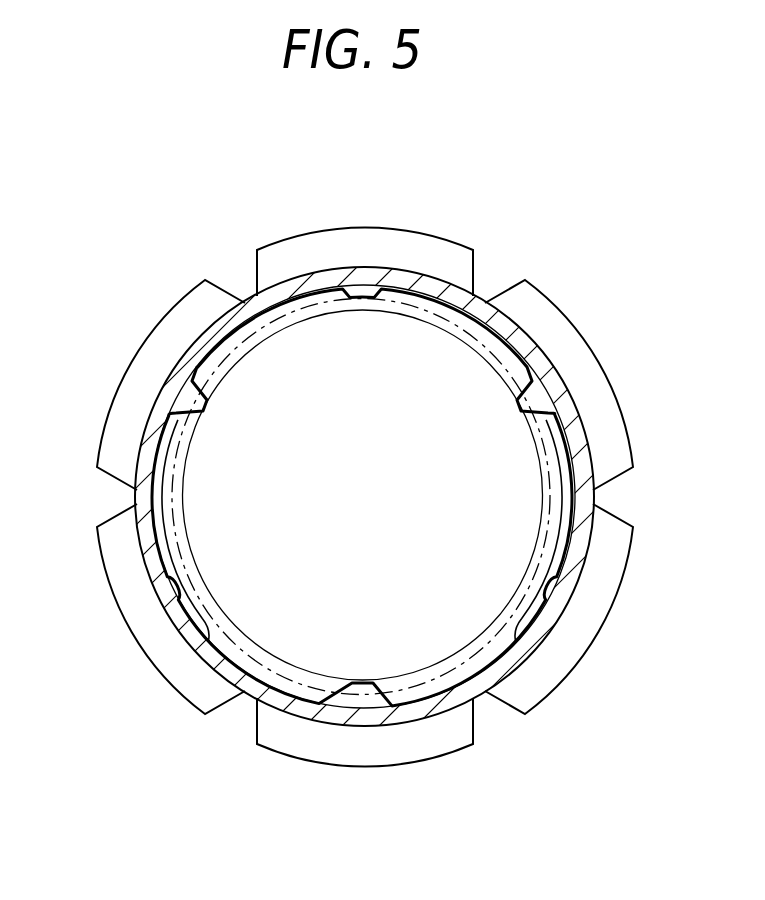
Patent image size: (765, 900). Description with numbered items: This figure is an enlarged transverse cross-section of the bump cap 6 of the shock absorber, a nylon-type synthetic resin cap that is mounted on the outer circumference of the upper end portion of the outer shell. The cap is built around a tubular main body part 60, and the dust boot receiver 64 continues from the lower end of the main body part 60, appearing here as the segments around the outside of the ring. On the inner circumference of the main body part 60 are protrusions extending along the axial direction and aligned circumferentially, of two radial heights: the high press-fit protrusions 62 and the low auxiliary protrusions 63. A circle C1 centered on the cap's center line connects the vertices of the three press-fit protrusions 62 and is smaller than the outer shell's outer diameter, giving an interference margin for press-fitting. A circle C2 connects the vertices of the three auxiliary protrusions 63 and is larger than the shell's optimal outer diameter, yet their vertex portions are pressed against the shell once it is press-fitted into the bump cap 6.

The bump cap 6 is at (146, 268).
The main body part 60 is at (516, 310).
The press-fit protrusion 62 is at (207, 400).
The auxiliary protrusion 63 is at (368, 300).
The dust boot receiver 64 is at (382, 237).
The circle C1 is at (186, 528).
The circle C2 is at (267, 655).